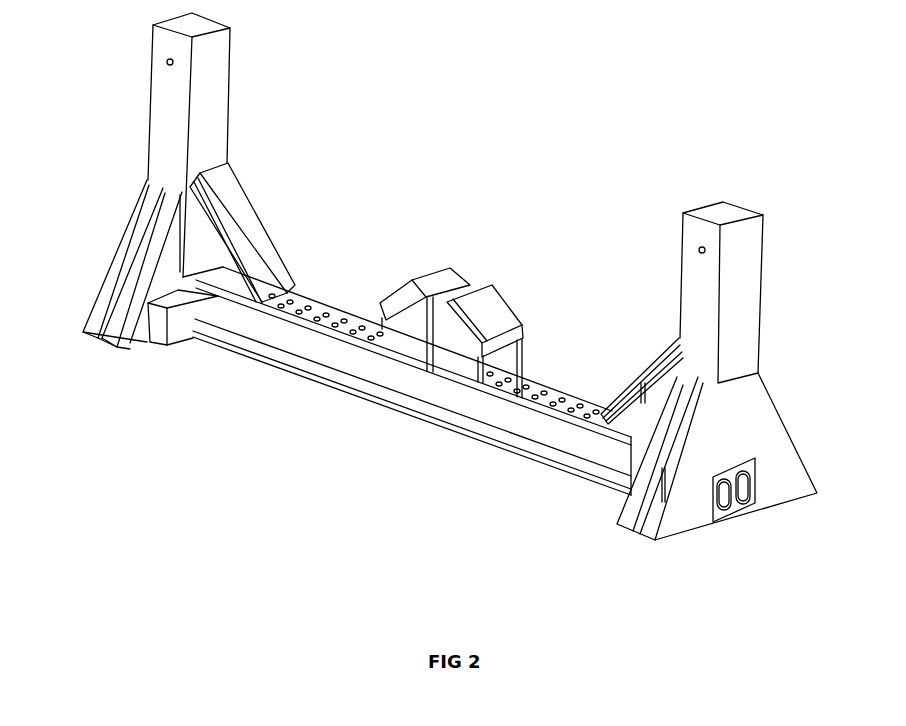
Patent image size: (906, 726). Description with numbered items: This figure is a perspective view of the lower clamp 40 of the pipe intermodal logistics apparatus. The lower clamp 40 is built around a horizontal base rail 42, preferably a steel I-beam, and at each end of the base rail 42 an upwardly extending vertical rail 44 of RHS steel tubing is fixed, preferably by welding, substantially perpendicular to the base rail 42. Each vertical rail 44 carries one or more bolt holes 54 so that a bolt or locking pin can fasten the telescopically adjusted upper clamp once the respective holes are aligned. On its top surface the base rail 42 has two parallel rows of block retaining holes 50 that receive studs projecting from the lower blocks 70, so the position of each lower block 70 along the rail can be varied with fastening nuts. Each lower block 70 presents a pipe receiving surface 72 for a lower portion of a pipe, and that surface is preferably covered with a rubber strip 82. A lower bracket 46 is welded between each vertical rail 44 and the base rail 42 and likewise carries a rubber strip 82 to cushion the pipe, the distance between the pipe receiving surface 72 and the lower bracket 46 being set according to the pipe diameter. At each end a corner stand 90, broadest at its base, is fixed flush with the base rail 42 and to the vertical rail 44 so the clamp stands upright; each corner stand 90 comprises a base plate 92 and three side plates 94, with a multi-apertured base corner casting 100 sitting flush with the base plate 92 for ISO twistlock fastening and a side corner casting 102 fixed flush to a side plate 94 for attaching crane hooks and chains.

The lower clamp 40 is at (430, 151).
The horizontal base rail 42 is at (430, 392).
The vertical rail 44 is at (163, 122).
The lower bracket 46 is at (645, 380).
The block retaining holes 50 is at (545, 380).
The bolt hole 54 is at (166, 62).
The lower block 70 is at (403, 345).
The pipe receiving surface 72 is at (523, 338).
The rubber strip 82 is at (274, 241).
The corner stand 90 is at (98, 256).
The base plate 92 is at (105, 343).
The side plate 94 is at (80, 320).
The base corner casting 100 is at (178, 336).
The side corner casting 102 is at (738, 513).